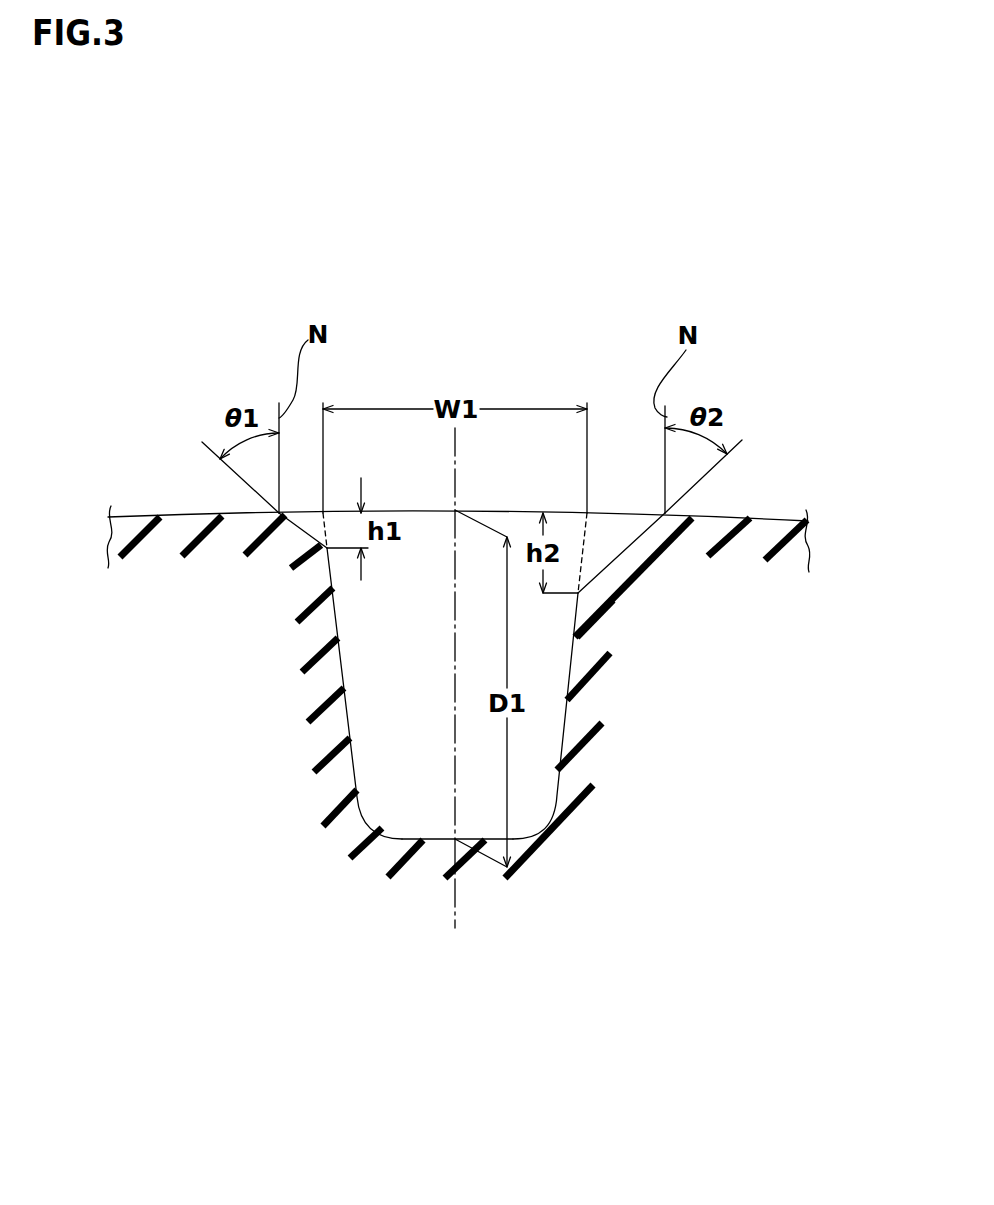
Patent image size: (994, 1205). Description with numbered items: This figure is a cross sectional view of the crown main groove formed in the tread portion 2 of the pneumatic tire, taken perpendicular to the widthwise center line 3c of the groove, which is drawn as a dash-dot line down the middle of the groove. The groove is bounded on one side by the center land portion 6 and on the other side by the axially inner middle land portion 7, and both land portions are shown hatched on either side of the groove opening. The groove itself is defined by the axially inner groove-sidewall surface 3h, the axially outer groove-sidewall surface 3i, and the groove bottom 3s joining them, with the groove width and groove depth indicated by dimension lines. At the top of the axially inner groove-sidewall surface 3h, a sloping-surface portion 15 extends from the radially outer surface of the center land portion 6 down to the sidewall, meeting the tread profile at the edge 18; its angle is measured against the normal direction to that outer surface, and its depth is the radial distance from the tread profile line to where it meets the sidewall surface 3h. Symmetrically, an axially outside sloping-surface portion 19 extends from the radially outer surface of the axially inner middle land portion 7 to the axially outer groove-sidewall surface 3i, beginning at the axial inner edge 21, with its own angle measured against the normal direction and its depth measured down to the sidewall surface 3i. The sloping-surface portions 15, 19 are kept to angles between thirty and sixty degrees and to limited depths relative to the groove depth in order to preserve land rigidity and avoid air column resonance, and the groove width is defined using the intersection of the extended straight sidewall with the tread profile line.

The tread portion 2 is at (662, 307).
The center land portion 6 is at (147, 516).
The axially inner middle land portion 7 is at (766, 518).
The edge 18 is at (278, 513).
The axial inner edge 21 is at (663, 513).
The sloping-surface portion 15 is at (310, 524).
The axially outside sloping-surface portion 19 is at (643, 541).
The widthwise center line 3c is at (455, 470).
The axially inner groove-sidewall surface 3h is at (350, 725).
The axially outer groove-sidewall surface 3i is at (557, 752).
The groove bottom 3s is at (410, 839).